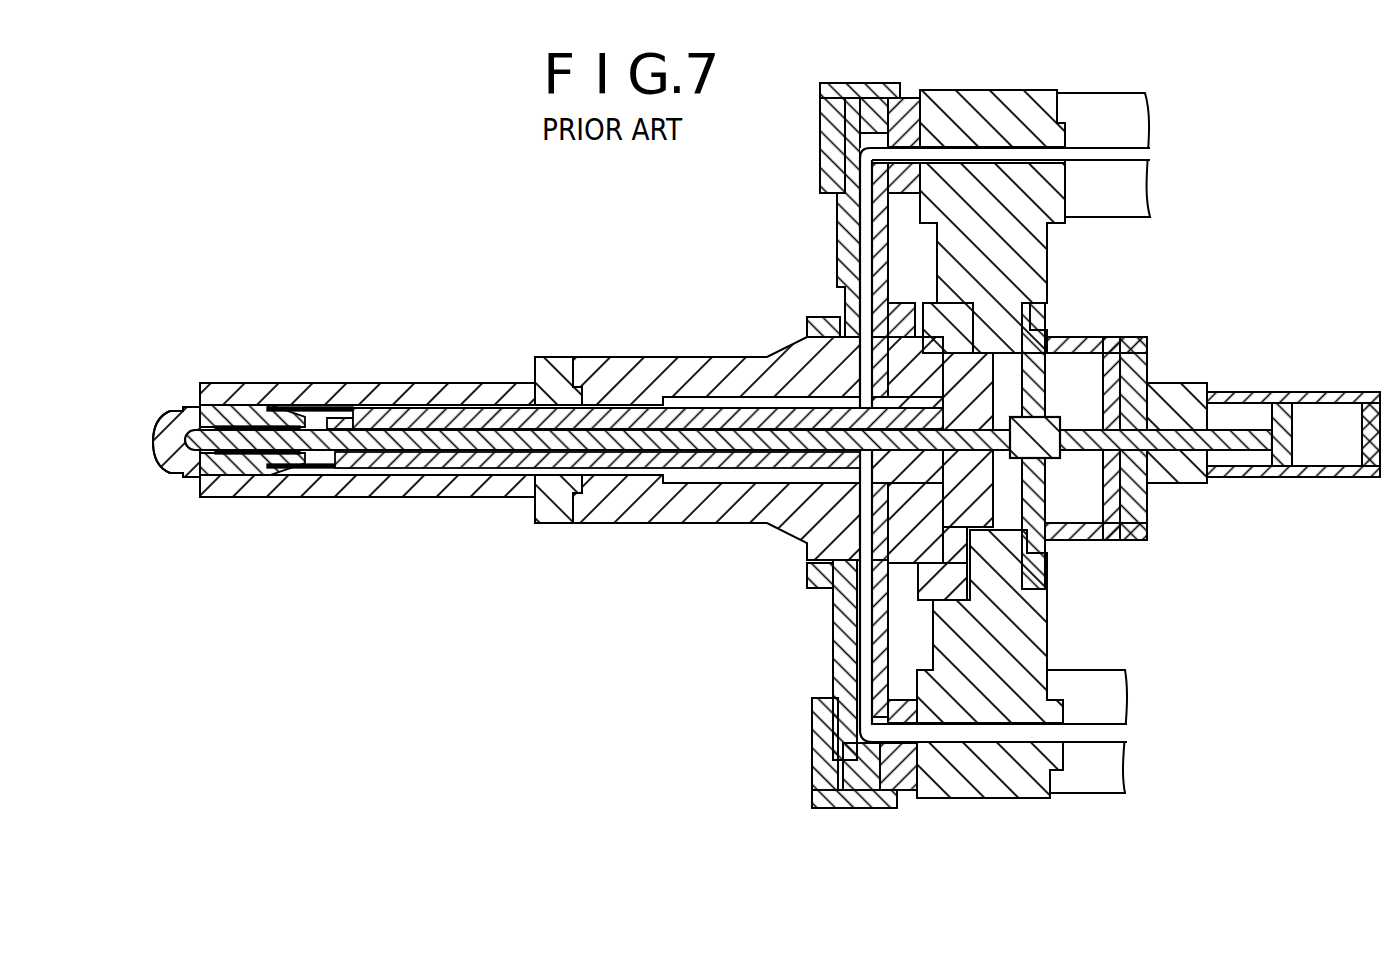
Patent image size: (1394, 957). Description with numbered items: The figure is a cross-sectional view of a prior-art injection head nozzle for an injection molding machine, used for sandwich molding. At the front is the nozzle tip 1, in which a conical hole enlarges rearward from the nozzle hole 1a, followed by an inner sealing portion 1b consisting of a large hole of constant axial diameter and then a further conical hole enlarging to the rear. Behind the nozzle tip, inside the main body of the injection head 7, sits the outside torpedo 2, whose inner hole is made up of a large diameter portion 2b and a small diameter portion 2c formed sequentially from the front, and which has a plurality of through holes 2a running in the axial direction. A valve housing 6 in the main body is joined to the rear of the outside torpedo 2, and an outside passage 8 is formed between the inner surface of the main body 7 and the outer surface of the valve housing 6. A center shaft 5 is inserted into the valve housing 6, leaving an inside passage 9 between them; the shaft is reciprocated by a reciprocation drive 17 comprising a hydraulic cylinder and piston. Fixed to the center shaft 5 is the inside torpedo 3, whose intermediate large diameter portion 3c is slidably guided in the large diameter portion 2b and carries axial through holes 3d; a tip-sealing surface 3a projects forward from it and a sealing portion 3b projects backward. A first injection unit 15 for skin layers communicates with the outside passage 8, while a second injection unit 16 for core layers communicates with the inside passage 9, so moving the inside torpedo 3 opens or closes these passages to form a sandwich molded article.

The nozzle tip 1 is at (190, 452).
The nozzle hole 1a is at (157, 436).
The inner sealing portion 1b is at (212, 400).
The outside torpedo 2 is at (303, 405).
The through holes 2a is at (327, 417).
The large diameter portion 2b is at (297, 407).
The small diameter portion 2c is at (327, 468).
The inside torpedo 3 is at (212, 465).
The tip-sealing surface 3a is at (160, 452).
The sealing portion 3b is at (297, 452).
The intermediate large diameter portion 3c is at (241, 410).
The through holes 3d is at (245, 475).
The center shaft 5 is at (457, 441).
The valve housing 6 is at (660, 465).
The main body of the injection head 7 is at (512, 383).
The outside passage 8 is at (594, 475).
The inside passage 9 is at (613, 455).
The first injection unit 15 is at (1123, 108).
The second injection unit 16 is at (1105, 795).
The reciprocation drive 17 is at (1228, 483).